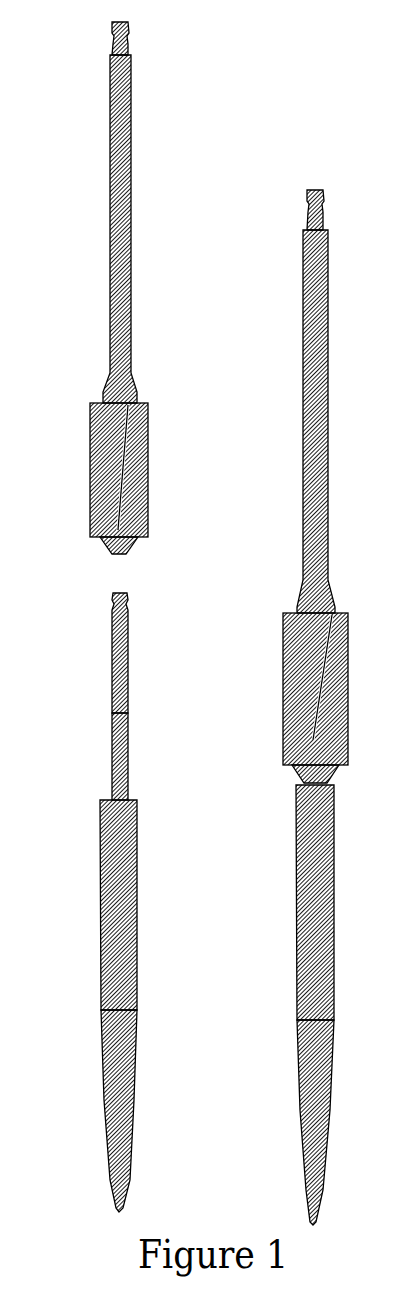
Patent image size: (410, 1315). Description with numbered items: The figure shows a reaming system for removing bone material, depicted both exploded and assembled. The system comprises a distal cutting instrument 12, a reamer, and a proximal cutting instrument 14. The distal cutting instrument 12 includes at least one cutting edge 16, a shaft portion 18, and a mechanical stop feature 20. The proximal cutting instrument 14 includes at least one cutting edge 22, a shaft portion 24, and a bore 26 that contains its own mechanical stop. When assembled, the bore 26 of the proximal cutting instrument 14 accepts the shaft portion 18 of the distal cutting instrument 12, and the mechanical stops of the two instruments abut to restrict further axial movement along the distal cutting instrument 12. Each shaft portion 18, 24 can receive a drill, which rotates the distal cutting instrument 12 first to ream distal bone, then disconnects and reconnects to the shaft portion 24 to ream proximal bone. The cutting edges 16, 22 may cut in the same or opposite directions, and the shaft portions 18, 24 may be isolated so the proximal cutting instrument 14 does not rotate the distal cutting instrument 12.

The distal cutting instrument 12 is at (87, 874).
The proximal cutting instrument 14 is at (82, 278).
The cutting edge 16 is at (110, 1047).
The shaft portion 18 is at (135, 688).
The mechanical stop feature 20 is at (120, 715).
The cutting edge 22 is at (100, 447).
The shaft portion 24 is at (146, 267).
The bore 26 is at (122, 556).